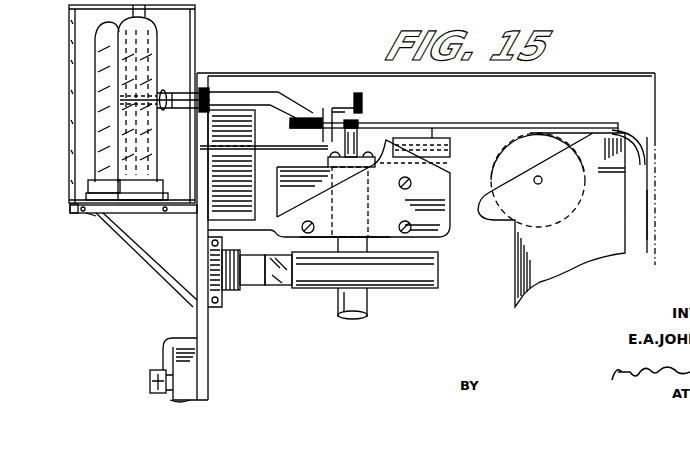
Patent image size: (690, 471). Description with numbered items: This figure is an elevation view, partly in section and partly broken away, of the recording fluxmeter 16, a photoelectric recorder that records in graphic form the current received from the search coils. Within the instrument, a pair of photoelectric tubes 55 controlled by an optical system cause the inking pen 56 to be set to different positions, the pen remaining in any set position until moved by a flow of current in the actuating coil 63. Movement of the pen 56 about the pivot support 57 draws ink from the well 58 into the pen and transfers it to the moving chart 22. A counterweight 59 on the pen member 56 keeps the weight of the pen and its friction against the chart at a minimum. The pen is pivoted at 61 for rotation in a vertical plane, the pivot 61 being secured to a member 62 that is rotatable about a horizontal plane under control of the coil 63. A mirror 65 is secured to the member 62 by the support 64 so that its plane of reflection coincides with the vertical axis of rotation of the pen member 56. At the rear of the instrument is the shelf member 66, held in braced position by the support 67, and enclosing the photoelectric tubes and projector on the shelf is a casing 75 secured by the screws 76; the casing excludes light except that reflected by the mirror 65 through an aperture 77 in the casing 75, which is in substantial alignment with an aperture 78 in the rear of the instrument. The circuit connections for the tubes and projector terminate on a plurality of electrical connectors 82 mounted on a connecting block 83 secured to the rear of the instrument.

The recording fluxmeter 16 is at (205, 345).
The moving chart 22 is at (651, 210).
The photoelectric tubes 55 is at (410, 292).
The inking pen 56 is at (528, 132).
The pivot support 57 is at (360, 130).
The ink well 58 is at (452, 147).
The counterweight 59 is at (290, 122).
The pivot 61 is at (392, 122).
The rotatable member 62 is at (262, 144).
The actuating coil 63 is at (356, 201).
The support 64 is at (358, 120).
The mirror 65 is at (353, 98).
The shelf member 66 is at (94, 214).
The support 67 is at (147, 264).
The casing 75 is at (69, 85).
The screws 76 is at (74, 213).
The aperture 77 is at (200, 100).
The aperture 78 is at (206, 86).
The electrical connectors 82 is at (150, 380).
The connecting block 83 is at (173, 402).